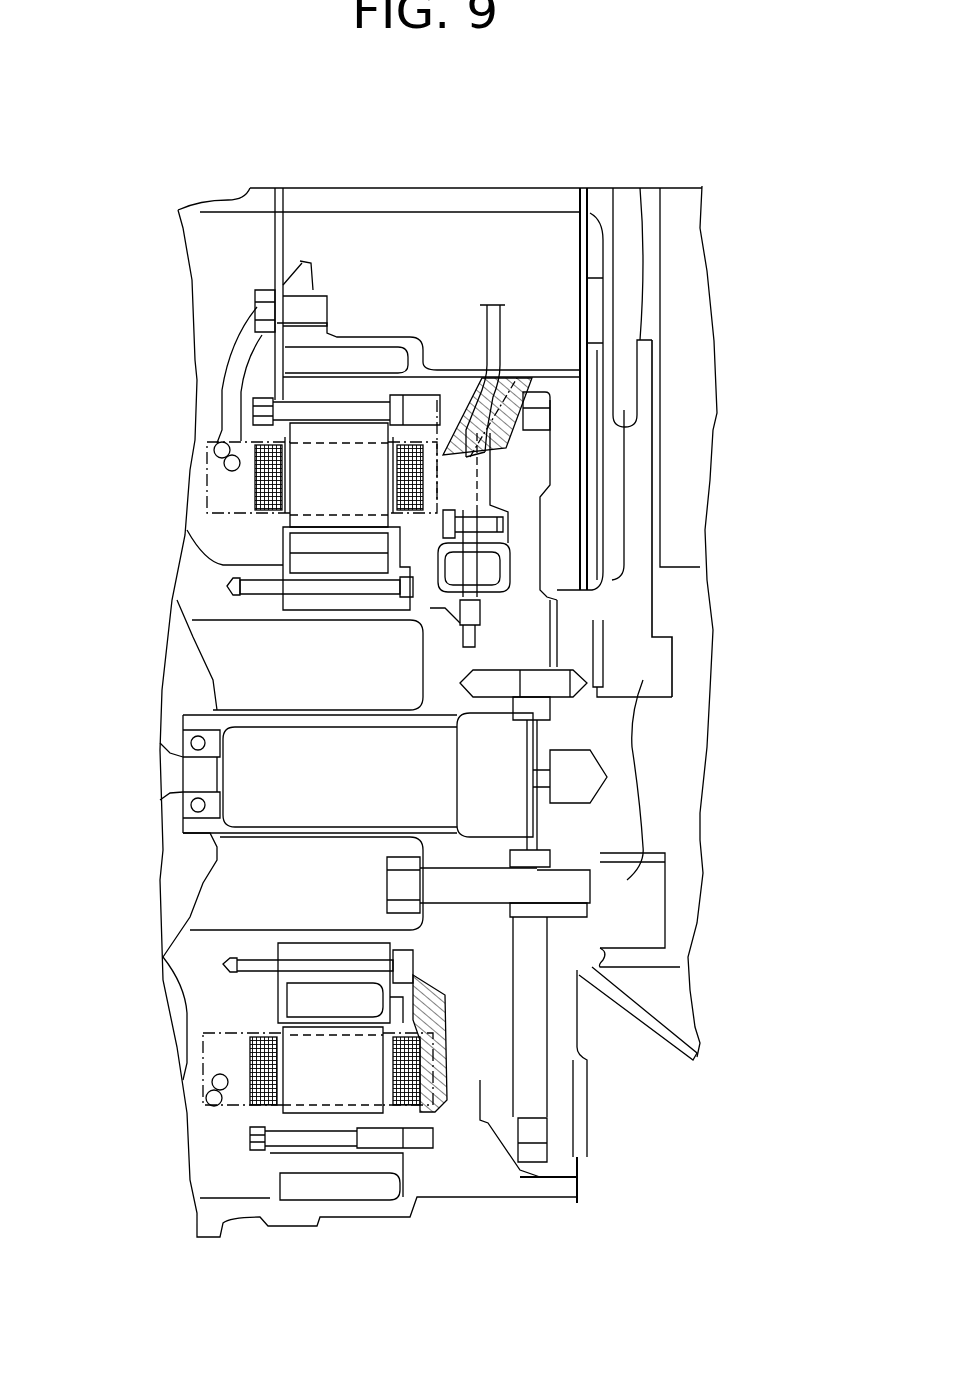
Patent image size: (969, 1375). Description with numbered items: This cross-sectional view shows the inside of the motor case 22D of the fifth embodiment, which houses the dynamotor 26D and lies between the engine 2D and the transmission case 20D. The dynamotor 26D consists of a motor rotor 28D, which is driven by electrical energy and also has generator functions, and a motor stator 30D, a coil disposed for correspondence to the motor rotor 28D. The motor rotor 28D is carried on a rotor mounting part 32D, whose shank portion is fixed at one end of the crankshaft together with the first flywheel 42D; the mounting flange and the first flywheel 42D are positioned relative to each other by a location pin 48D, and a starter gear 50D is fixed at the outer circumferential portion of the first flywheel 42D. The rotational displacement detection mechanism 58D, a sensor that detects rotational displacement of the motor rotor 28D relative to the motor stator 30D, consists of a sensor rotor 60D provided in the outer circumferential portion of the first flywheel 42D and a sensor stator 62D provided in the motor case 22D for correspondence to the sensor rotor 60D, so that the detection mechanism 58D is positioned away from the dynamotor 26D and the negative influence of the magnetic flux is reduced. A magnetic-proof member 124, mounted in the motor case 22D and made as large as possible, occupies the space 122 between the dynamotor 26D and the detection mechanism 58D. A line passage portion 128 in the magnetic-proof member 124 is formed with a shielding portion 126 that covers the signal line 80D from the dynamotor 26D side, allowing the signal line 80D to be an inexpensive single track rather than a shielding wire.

The engine 2D is at (598, 183).
The transmission case 20D is at (203, 197).
The motor case 22D is at (308, 183).
The dynamotor 26D is at (227, 1137).
The motor rotor 28D is at (280, 988).
The motor stator 30D is at (247, 1090).
The rotor mounting part 32D is at (200, 708).
The first flywheel 42D is at (527, 1082).
The location pin 48D is at (547, 685).
The starter gear 50D is at (530, 1163).
The rotational displacement detection mechanism 58D is at (500, 608).
The sensor rotor 60D is at (470, 618).
The sensor stator 62D is at (505, 568).
The signal line 80D is at (487, 333).
The space 122 is at (430, 1025).
The magnetic-proof member 124 is at (428, 1115).
The shielding portion 126 is at (492, 474).
The line passage portion 128 is at (449, 454).